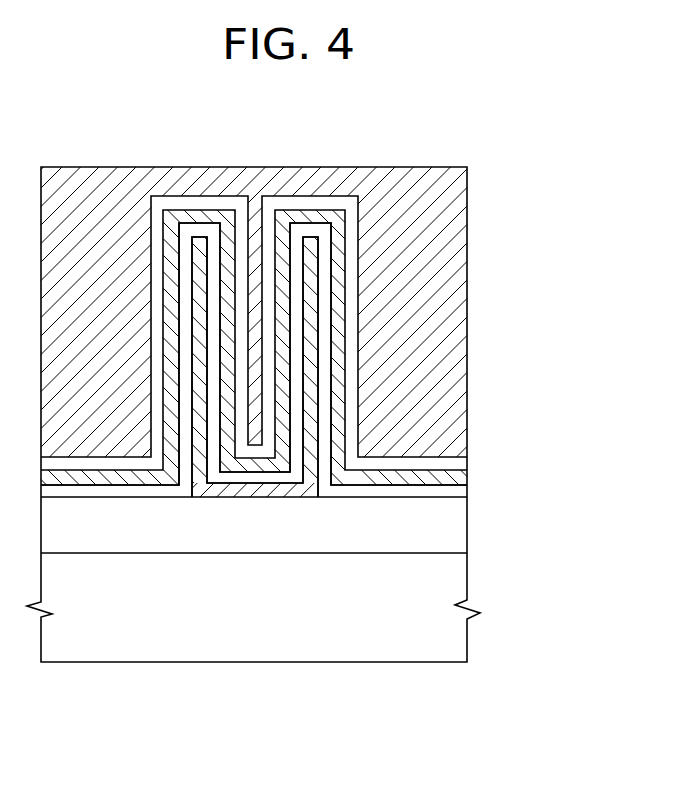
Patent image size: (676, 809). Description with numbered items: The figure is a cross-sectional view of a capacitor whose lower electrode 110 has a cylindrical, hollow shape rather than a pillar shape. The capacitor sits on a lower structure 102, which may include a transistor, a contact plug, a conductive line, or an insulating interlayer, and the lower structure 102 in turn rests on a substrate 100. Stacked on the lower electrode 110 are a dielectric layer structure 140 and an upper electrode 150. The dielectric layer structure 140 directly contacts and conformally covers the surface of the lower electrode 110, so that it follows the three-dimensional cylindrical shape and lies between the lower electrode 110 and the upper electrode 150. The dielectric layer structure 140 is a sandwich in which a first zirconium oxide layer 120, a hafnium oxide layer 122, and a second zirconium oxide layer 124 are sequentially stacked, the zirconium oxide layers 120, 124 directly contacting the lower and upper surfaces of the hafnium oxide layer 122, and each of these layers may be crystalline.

The substrate 100 is at (455, 641).
The lower structure 102 is at (457, 522).
The lower electrode 110 is at (310, 395).
The first zirconium oxide layer 120 is at (327, 333).
The hafnium oxide layer 122 is at (337, 303).
The second zirconium oxide layer 124 is at (352, 268).
The dielectric layer structure 140 is at (315, 353).
The upper electrode 150 is at (460, 217).